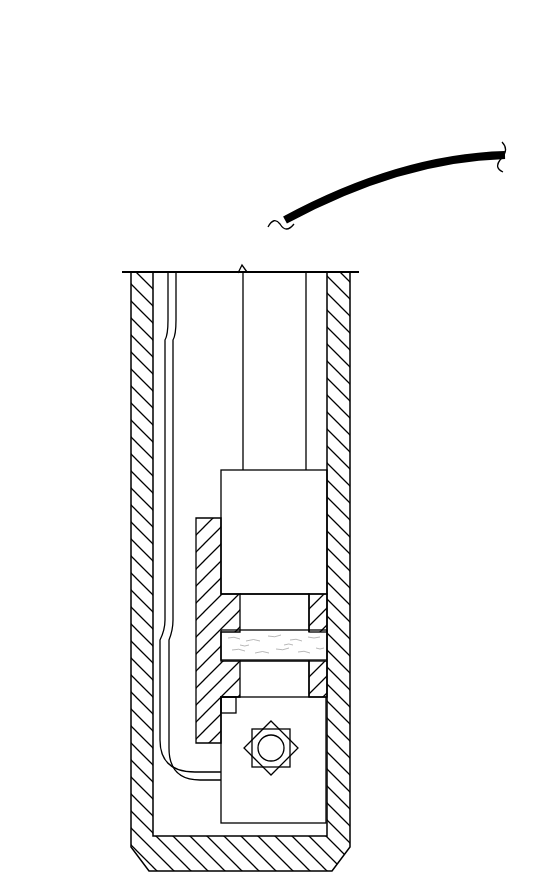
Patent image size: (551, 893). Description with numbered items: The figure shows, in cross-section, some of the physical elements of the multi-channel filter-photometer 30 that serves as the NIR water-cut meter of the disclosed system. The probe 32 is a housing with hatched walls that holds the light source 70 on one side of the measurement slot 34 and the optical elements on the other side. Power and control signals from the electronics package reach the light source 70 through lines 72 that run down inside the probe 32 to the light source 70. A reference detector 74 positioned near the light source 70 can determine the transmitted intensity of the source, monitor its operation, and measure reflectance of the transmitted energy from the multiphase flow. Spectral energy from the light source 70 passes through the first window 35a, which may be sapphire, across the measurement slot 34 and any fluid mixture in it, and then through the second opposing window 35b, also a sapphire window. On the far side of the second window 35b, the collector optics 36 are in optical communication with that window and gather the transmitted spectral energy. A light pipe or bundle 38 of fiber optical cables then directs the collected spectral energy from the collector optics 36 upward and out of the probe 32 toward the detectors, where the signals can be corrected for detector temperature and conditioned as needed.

The multi-channel filter-photometer 30 is at (236, 86).
The probe 32 is at (131, 335).
The measurement slot 34 is at (340, 652).
The first window 35a is at (315, 690).
The second opposing window 35b is at (315, 609).
The collector optics 36 is at (314, 517).
The bundle of fiber optical cables 38 is at (410, 161).
The light source 70 is at (308, 797).
The lines 72 is at (165, 457).
The reference detector 74 is at (221, 707).